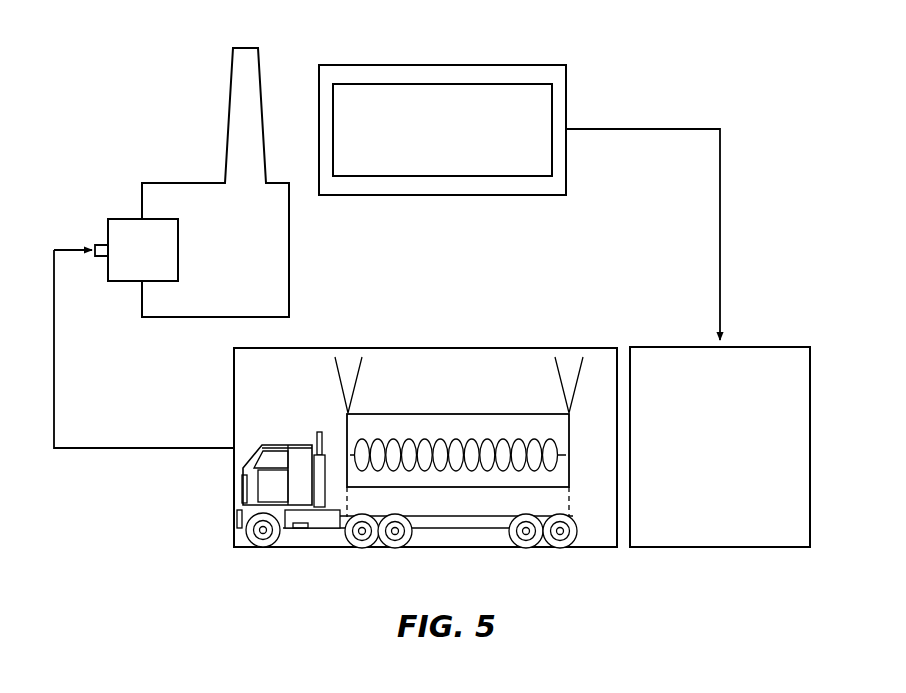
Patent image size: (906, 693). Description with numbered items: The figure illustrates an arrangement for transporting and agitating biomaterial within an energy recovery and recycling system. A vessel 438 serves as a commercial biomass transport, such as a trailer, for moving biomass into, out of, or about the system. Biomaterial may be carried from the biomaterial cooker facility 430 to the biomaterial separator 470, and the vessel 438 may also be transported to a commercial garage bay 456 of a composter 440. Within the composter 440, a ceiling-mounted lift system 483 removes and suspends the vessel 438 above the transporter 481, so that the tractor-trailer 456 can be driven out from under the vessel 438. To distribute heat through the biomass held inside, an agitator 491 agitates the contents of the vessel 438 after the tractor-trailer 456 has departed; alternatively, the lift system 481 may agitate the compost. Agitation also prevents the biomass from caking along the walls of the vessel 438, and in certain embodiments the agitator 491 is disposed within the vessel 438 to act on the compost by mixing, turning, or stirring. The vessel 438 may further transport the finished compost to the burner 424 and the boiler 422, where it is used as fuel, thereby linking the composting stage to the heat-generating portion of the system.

The boiler 422 is at (247, 264).
The burner 424 is at (164, 264).
The biomaterial cooker facility 430 is at (442, 65).
The vessel 438 is at (441, 166).
The composter 440 is at (593, 547).
The commercial garage bay 456 is at (207, 532).
The biomaterial separator 470 is at (742, 463).
The transporter 481 is at (315, 535).
The ceiling-mounted lift system 483 is at (355, 392).
The agitator 491 is at (422, 468).